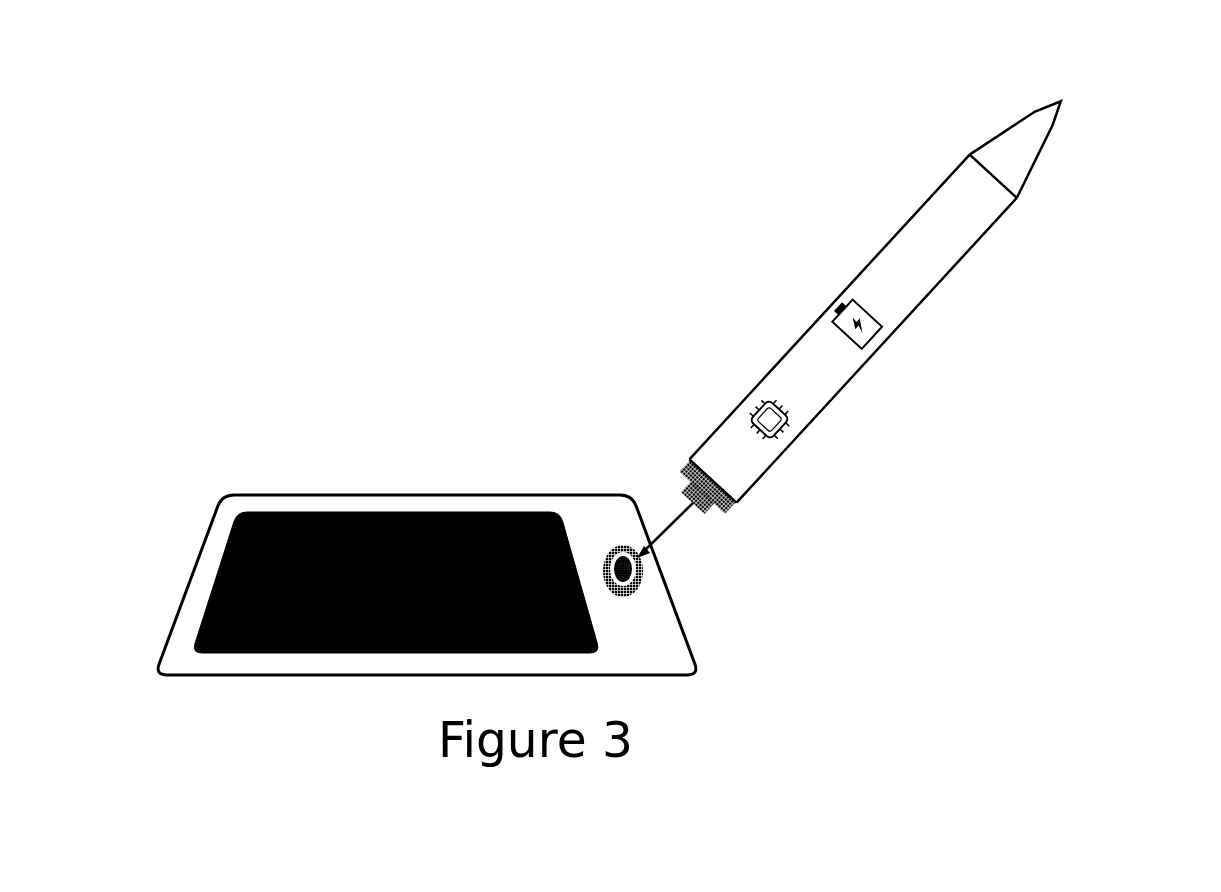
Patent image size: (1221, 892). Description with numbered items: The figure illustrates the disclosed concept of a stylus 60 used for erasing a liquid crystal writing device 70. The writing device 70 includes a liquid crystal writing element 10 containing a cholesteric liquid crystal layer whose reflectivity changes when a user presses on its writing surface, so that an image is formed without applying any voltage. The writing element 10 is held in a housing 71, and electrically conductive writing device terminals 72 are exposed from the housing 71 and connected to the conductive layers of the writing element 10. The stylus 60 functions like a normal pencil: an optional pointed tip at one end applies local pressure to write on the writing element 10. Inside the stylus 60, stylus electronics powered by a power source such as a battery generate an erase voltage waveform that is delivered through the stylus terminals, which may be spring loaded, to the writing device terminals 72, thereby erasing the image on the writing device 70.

The liquid crystal writing element 10 is at (280, 512).
The stylus 60 is at (742, 136).
The liquid crystal writing device 70 is at (427, 372).
The housing 71 is at (588, 522).
The writing device terminals 72 is at (623, 548).